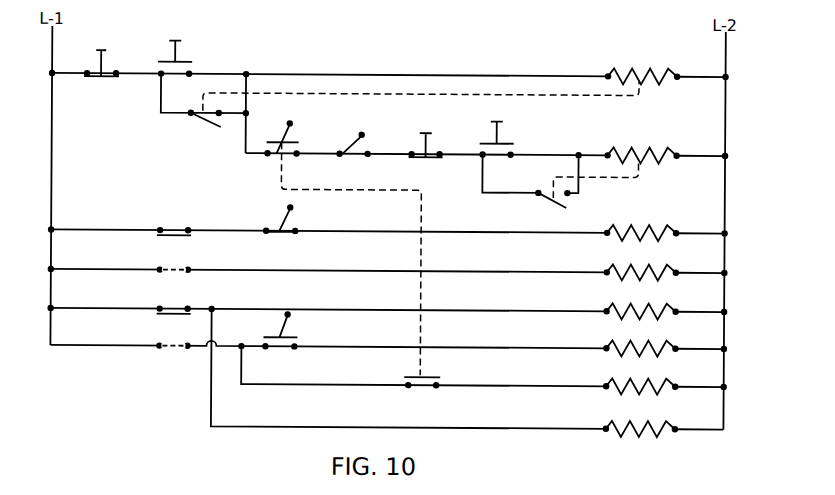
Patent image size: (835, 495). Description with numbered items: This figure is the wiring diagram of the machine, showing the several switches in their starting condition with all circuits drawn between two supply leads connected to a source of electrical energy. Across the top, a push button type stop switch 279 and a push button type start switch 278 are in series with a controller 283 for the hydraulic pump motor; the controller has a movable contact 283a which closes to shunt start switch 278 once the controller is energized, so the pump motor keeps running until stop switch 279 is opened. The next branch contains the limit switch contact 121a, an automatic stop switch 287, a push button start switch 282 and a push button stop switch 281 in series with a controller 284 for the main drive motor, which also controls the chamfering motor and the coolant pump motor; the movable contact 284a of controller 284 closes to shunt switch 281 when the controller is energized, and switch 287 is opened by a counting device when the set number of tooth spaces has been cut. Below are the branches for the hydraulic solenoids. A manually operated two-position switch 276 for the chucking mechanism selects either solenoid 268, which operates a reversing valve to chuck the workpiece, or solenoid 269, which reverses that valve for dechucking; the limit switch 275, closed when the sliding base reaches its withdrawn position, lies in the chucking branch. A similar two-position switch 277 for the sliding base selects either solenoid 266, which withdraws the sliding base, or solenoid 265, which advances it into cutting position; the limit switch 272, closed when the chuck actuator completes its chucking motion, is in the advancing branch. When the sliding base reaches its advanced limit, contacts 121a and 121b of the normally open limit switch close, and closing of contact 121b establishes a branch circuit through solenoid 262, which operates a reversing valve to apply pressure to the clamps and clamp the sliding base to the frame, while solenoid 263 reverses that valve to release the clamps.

The stop switch 279 is at (100, 80).
The start switch 278 is at (166, 61).
The controller 283 is at (626, 72).
The controller 284 is at (622, 150).
The movable contact 283a is at (204, 121).
The limit switch contact 121a is at (286, 138).
The automatic stop switch 287 is at (344, 157).
The start switch 282 is at (422, 159).
The stop switch 281 is at (494, 140).
The movable contact 284a is at (560, 205).
The solenoid 269 is at (662, 229).
The solenoid 268 is at (662, 268).
The solenoid 266 is at (662, 307).
The solenoid 265 is at (662, 344).
The solenoid 262 is at (662, 382).
The solenoid 263 is at (662, 424).
The two-position switch 276 is at (172, 237).
The two-position switch 277 is at (172, 315).
The limit switch 275 is at (275, 229).
The limit switch 272 is at (296, 334).
The limit switch contact 121b is at (428, 375).